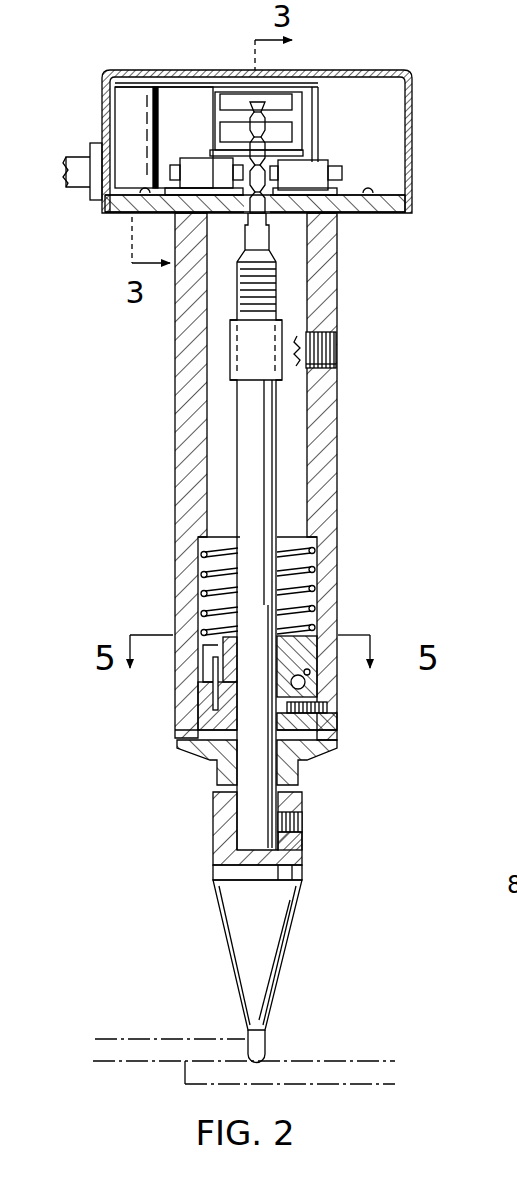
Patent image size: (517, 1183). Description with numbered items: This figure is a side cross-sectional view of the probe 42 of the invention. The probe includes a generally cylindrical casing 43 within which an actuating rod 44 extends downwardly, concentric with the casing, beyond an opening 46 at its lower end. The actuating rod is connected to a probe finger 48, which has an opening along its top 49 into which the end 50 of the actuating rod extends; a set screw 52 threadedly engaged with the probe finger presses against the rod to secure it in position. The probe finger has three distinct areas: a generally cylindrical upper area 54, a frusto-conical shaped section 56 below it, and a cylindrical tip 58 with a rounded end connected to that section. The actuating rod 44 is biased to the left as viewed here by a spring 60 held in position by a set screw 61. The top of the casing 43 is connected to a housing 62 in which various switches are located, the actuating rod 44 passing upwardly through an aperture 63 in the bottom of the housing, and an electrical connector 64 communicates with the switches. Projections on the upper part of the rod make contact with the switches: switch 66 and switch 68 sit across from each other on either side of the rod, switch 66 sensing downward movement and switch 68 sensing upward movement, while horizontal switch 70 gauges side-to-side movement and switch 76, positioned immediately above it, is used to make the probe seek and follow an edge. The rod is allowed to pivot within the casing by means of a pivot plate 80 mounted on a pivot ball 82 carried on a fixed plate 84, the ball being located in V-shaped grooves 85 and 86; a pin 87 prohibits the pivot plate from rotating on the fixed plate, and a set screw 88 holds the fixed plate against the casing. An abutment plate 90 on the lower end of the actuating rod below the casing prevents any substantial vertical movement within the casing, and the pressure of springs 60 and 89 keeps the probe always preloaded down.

The probe 42 is at (350, 442).
The casing 43 is at (328, 510).
The actuating rod 44 is at (267, 570).
The opening 46 is at (333, 738).
The probe finger 48 is at (294, 843).
The top 49 is at (297, 788).
The end 50 is at (250, 814).
The set screw 52 is at (302, 821).
The upper area 54 is at (298, 873).
The frusto-conical shaped section 56 is at (290, 928).
The cylindrical tip 58 is at (267, 1042).
The spring 60 is at (297, 345).
The set screw 61 is at (337, 356).
The housing 62 is at (408, 133).
The aperture 63 is at (273, 207).
The electrical connector 64 is at (78, 191).
The switch 66 is at (198, 163).
The switch 68 is at (320, 165).
The horizontal switch 70 is at (290, 133).
The switch 76 is at (288, 103).
The pivot plate 80 is at (302, 668).
The pivot ball 82 is at (306, 681).
The fixed plate 84 is at (327, 704).
The V-shaped groove 85 is at (310, 671).
The V-shaped groove 86 is at (290, 697).
The pin 87 is at (212, 691).
The set screw 88 is at (337, 718).
The spring 89 is at (200, 552).
The abutment plate 90 is at (323, 749).